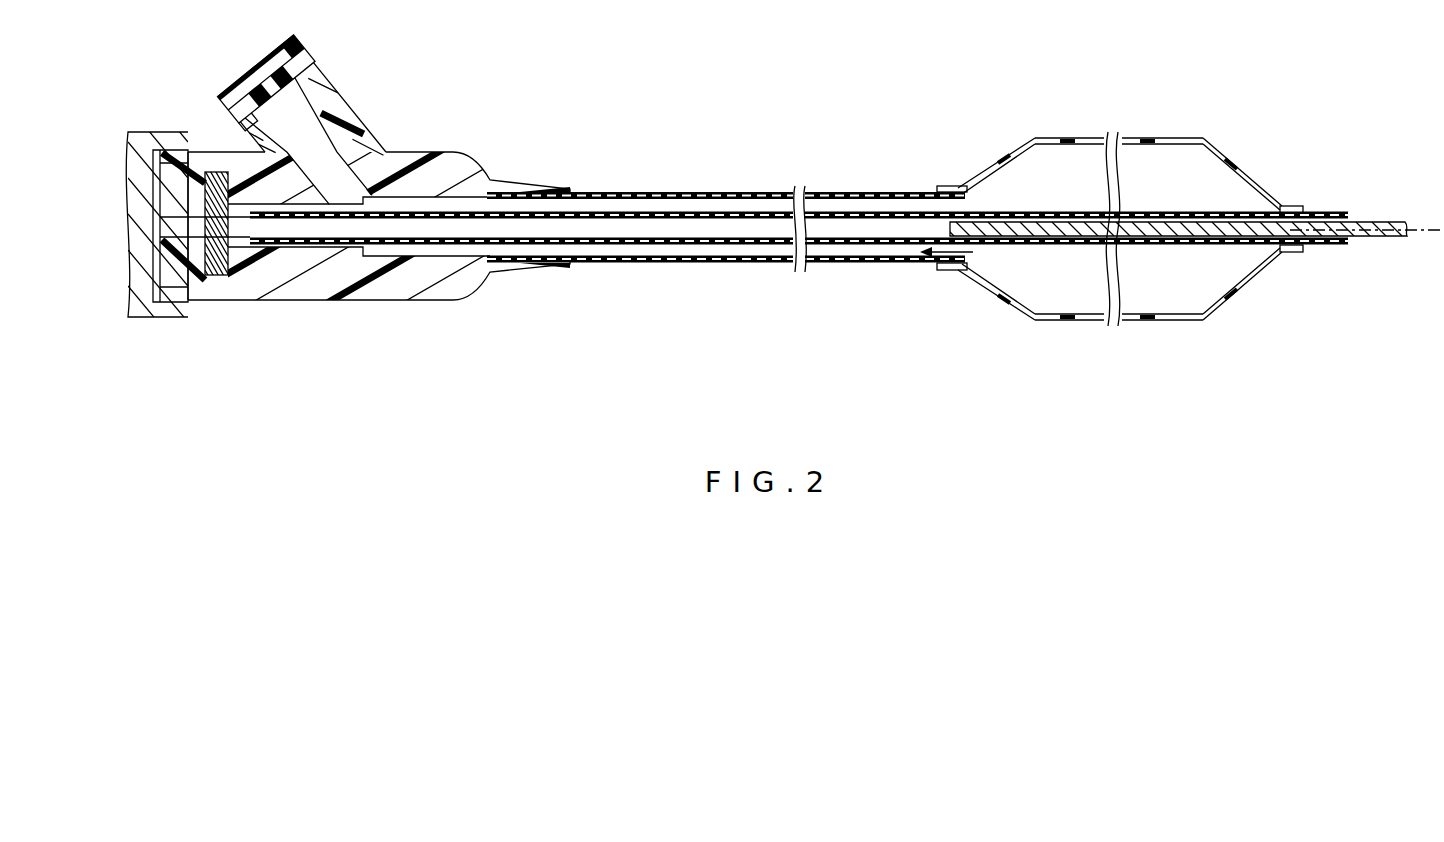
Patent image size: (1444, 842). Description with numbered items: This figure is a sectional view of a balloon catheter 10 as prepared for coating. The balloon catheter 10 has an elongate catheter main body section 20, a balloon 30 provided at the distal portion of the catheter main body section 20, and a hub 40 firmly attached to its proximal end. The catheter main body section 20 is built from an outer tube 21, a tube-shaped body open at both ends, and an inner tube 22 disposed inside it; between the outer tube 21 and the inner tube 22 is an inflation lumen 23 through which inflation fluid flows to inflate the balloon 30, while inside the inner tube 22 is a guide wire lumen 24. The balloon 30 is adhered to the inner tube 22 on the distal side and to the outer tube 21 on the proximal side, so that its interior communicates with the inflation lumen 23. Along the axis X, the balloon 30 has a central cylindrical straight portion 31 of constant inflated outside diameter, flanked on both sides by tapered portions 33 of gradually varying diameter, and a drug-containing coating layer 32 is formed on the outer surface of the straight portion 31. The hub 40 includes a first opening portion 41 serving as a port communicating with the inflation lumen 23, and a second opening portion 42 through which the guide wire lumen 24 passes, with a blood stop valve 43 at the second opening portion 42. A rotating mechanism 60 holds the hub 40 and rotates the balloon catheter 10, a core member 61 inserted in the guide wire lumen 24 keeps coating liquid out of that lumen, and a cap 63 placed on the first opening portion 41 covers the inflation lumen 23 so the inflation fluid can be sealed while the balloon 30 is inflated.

The balloon catheter 10 is at (585, 165).
The catheter main body section 20 is at (799, 176).
The outer tube 21 is at (726, 179).
The inner tube 22 is at (799, 177).
The inflation lumen 23 is at (655, 205).
The guide wire lumen 24 is at (716, 222).
The balloon 30 is at (1120, 229).
The straight portion 31 is at (1168, 320).
The coating layer 32 is at (1137, 138).
The tapered portions 33 is at (988, 288).
The hub 40 is at (356, 177).
The first opening portion 41 is at (273, 53).
The second opening portion 42 is at (173, 220).
The blood stop valve 43 is at (219, 275).
The rotating mechanism 60 is at (179, 317).
The core member 61 is at (1366, 223).
The cap 63 is at (232, 90).
The axis X is at (1432, 230).